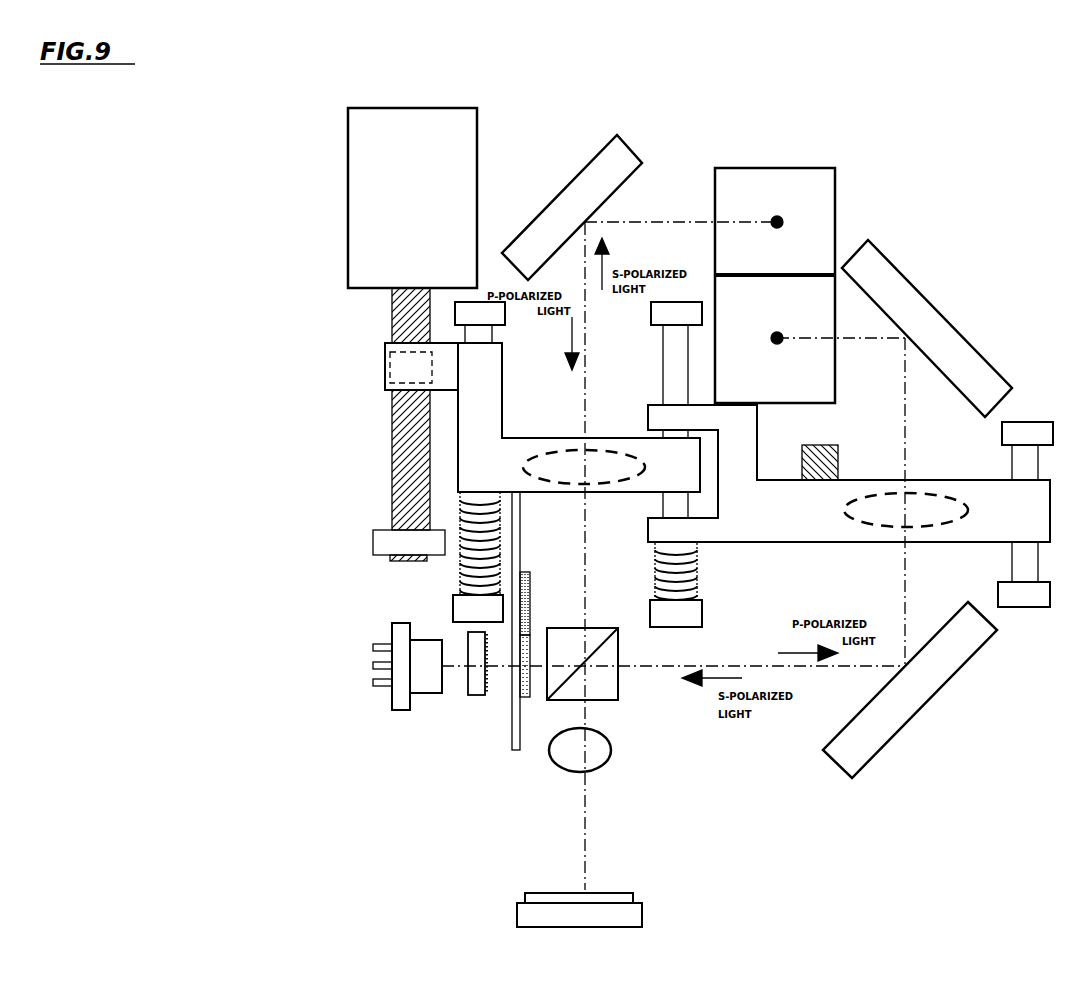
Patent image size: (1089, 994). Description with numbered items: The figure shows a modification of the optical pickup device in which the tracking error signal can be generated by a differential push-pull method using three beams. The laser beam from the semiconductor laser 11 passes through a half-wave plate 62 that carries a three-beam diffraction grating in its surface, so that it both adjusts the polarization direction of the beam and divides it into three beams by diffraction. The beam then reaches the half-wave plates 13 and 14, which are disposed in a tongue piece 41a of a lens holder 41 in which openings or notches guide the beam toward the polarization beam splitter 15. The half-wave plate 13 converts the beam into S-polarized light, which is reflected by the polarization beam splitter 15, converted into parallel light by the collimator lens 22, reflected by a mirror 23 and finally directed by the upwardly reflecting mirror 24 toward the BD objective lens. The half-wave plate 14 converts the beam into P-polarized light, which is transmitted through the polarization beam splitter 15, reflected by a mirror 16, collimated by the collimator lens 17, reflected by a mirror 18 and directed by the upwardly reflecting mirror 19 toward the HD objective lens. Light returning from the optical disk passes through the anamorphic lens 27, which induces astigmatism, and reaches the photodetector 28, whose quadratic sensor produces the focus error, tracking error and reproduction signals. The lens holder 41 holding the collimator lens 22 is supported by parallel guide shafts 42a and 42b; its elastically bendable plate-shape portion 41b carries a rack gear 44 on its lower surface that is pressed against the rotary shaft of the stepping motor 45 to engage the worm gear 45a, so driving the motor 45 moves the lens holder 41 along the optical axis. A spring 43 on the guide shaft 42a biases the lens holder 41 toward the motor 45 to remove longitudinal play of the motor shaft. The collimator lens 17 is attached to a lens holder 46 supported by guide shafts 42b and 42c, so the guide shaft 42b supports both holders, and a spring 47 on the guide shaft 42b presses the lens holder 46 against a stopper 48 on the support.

The semiconductor laser 11 is at (408, 720).
The half-wave plate 13 is at (530, 640).
The half-wave plate 14 is at (530, 585).
The polarization beam splitter 15 is at (610, 692).
The mirror 16 is at (930, 675).
The collimator lens 17 is at (935, 512).
The mirror 18 is at (905, 302).
The upwardly reflecting mirror 19 is at (812, 350).
The collimator lens 22 is at (562, 465).
The mirror 23 is at (600, 175).
The upwardly reflecting mirror 24 is at (820, 200).
The anamorphic lens 27 is at (573, 762).
The photodetector 28 is at (620, 893).
The lens holder 41 is at (603, 440).
The tongue piece 41a is at (515, 735).
The plate-shape portion 41b is at (385, 395).
The guide shaft 42a is at (478, 332).
The guide shaft 42b is at (676, 362).
The guide shaft 42c is at (1012, 465).
The spring 43 is at (460, 570).
The rack gear 44 is at (400, 350).
The motor 45 is at (415, 115).
The worm gear 45a is at (392, 480).
The lens holder 46 is at (815, 530).
The spring 47 is at (700, 560).
The stopper 48 is at (838, 460).
The half-wave plate 62 is at (475, 698).